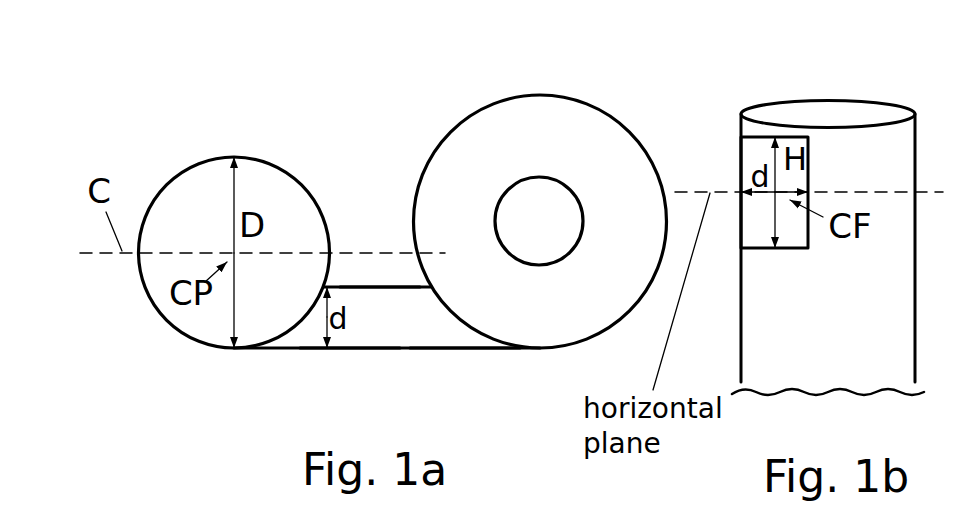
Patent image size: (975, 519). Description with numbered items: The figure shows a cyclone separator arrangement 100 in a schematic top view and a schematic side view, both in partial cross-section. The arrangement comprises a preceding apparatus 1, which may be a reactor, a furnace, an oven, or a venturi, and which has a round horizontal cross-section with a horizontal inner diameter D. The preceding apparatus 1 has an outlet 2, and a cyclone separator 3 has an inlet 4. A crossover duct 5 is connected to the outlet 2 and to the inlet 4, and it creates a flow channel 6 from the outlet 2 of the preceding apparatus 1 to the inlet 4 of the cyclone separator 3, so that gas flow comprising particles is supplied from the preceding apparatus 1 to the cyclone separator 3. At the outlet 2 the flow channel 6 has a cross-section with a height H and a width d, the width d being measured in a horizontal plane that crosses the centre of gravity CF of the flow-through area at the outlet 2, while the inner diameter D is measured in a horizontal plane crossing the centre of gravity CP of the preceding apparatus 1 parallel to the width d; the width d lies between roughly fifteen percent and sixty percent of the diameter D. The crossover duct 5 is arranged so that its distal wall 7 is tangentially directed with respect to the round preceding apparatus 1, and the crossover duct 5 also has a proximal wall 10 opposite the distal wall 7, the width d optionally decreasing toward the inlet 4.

In FIG. 1A, the cyclone separator arrangement 100 is at (295, 97).
In FIG. 1A, the preceding apparatus 1 is at (216, 187).
In FIG. 1B, the preceding apparatus 1 is at (825, 298).
In FIG. 1A, the outlet 2 is at (292, 313).
In FIG. 1B, the outlet 2 is at (755, 154).
In FIG. 1A, the cyclone separator 3 is at (440, 172).
In FIG. 1A, the inlet 4 is at (477, 317).
In FIG. 1A, the crossover duct 5 is at (357, 338).
In FIG. 1A, the flow channel 6 is at (387, 336).
In FIG. 1A, the distal wall 7 is at (433, 347).
In FIG. 1A, the proximal wall 10 is at (388, 287).